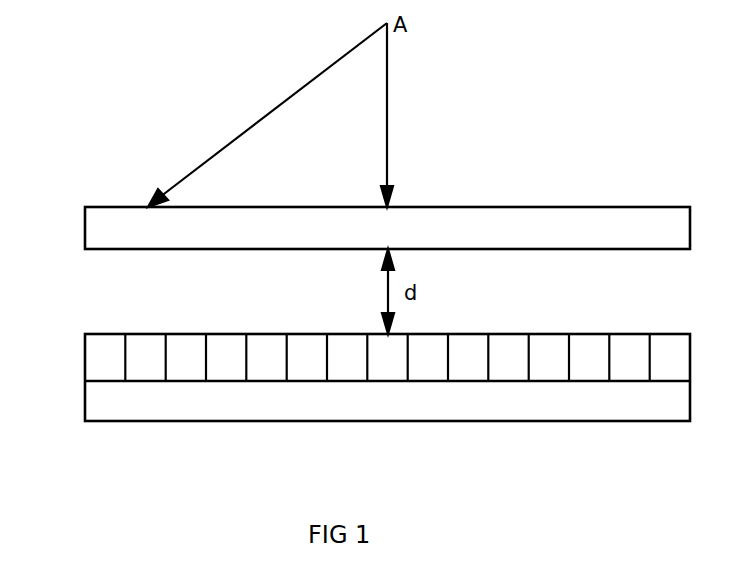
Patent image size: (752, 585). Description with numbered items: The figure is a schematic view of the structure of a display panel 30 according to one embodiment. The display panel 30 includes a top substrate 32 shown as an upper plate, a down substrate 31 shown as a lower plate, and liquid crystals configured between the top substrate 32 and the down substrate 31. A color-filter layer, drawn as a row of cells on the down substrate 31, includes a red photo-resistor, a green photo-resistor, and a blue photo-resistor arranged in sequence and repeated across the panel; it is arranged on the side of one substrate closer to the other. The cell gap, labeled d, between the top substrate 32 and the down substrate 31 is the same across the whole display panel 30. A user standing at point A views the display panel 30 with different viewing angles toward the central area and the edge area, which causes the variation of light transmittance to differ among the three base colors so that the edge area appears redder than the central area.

The display panel 30 is at (82, 228).
The down substrate 31 is at (524, 399).
The top substrate 32 is at (637, 235).